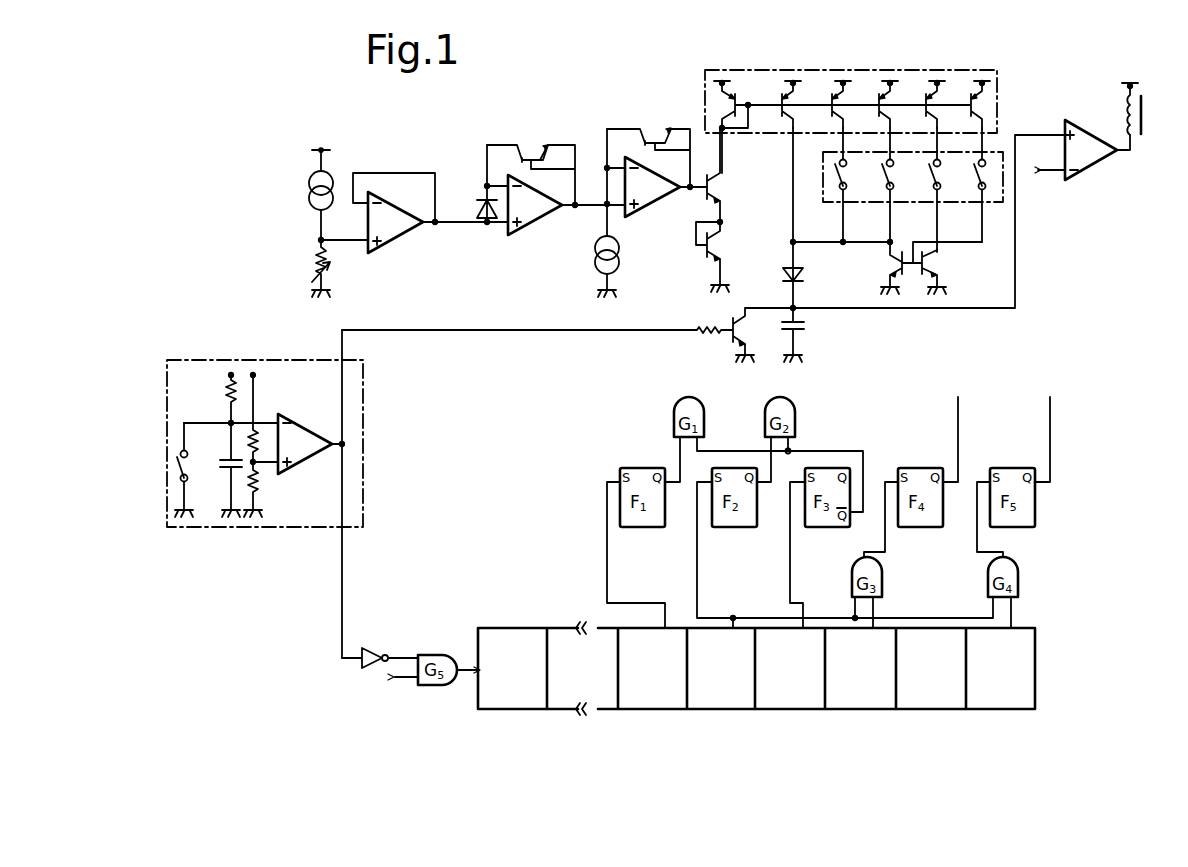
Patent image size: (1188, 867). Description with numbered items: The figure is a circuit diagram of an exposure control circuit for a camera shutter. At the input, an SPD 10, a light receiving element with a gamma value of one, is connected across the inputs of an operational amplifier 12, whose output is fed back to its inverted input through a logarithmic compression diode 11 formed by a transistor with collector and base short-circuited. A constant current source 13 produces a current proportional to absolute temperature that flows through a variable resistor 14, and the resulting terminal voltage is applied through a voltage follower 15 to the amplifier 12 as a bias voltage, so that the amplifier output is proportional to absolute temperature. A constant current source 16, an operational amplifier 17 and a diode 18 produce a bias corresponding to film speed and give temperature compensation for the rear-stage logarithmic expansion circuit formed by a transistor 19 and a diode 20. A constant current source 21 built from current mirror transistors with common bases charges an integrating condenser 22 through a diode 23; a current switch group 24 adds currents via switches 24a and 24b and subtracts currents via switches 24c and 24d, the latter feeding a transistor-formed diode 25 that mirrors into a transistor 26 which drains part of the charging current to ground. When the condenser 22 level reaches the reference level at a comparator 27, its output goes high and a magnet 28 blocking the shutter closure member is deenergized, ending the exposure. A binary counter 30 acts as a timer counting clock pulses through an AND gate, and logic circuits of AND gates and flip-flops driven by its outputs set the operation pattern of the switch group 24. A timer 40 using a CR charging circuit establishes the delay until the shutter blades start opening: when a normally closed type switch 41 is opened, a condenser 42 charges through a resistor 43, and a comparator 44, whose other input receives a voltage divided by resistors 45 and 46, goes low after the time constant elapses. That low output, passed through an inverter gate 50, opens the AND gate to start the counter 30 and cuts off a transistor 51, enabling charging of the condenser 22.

The SPD 10 is at (482, 192).
The logarithmic compression diode 11 is at (533, 149).
The operational amplifier 12 is at (546, 218).
The constant current source 13 is at (309, 187).
The variable resistor 14 is at (312, 263).
The voltage follower 15 is at (405, 237).
The constant current source 16 is at (608, 270).
The operational amplifier 17 is at (663, 209).
The diode 18 is at (650, 137).
The transistor 19 is at (723, 182).
The diode 20 is at (704, 260).
The constant current source 21 is at (733, 94).
The integrating condenser 22 is at (804, 326).
The diode 23 is at (803, 271).
The current switch group 24 is at (824, 198).
The switch 24a is at (688, 397).
The switch 24b is at (902, 187).
The switch 24c is at (958, 397).
The switch 24d is at (975, 190).
The diode 25 is at (938, 262).
The transistor 26 is at (888, 264).
The comparator 27 is at (1094, 166).
The magnet 28 is at (1145, 100).
The counter 30 is at (830, 710).
The timer 40 is at (245, 546).
The normally closed type switch 41 is at (176, 462).
The condenser 42 is at (224, 469).
The resistor 43 is at (226, 393).
The comparator 44 is at (302, 461).
The resistor 45 is at (254, 436).
The resistor 46 is at (254, 486).
The inverter gate 50 is at (369, 645).
The transistor 51 is at (740, 316).